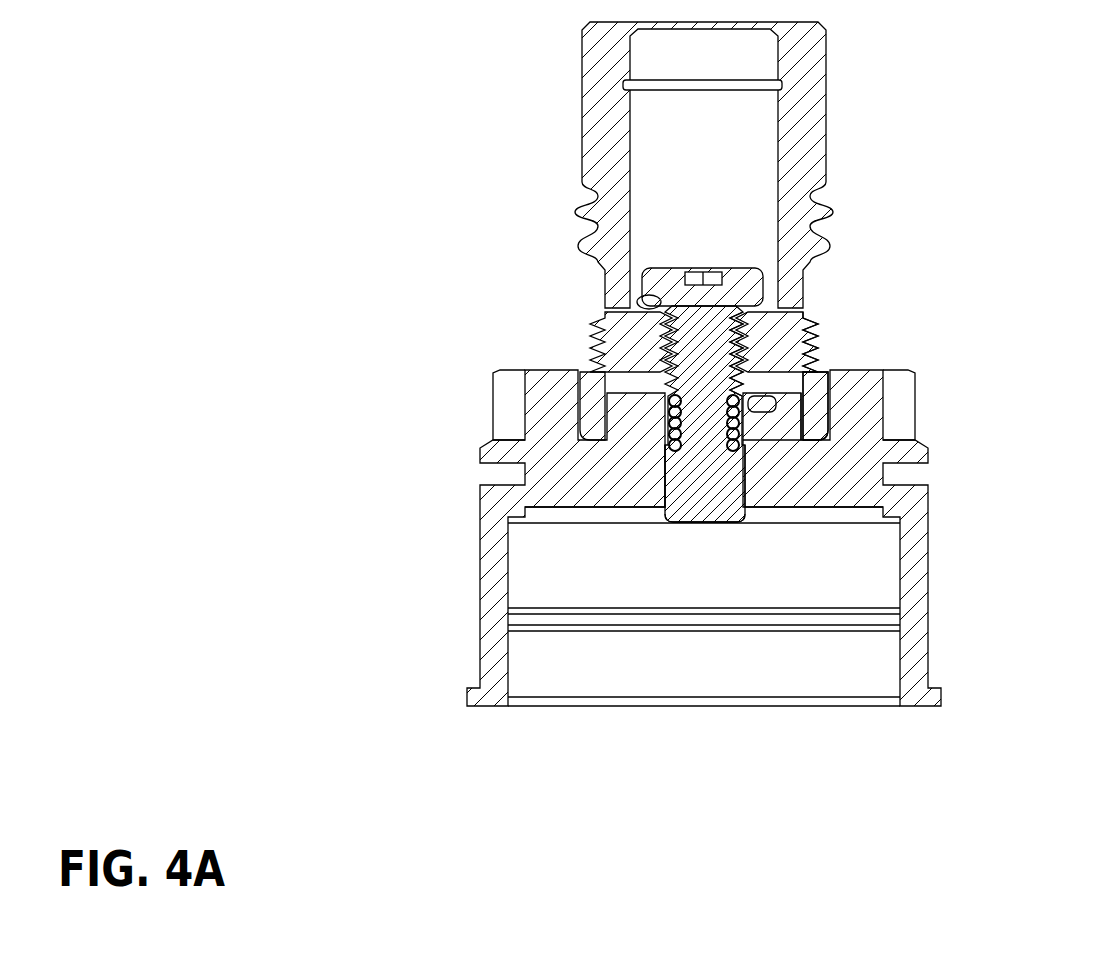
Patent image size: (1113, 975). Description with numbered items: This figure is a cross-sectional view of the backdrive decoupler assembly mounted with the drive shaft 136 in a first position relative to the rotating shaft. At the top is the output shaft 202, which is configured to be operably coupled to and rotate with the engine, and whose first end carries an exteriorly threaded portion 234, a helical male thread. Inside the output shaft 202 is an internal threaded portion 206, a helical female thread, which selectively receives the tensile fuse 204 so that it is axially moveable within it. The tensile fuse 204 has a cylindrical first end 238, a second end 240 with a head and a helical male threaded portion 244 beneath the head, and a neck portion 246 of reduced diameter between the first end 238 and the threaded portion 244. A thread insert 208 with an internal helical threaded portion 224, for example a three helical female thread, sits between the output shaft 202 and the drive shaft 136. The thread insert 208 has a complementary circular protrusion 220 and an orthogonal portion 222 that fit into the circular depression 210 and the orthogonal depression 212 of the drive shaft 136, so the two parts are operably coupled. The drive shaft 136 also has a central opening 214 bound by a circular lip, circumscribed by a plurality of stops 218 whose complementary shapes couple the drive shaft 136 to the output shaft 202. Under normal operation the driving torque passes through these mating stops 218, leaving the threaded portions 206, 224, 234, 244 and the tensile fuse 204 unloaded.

The output shaft 202 is at (805, 128).
The tensile fuse 204 is at (742, 290).
The second end 240 is at (672, 302).
The exteriorly threaded portion 234 is at (600, 350).
The internal helical threaded portion 224 is at (798, 340).
The internal threaded portion 206 is at (665, 335).
The threaded portion 244 is at (750, 321).
The neck portion 246 is at (677, 397).
The drive shaft 136 is at (915, 597).
The orthogonal depression 212 is at (930, 449).
The thread insert 208 is at (825, 395).
The orthogonal portion 222 is at (827, 403).
The circular protrusion 220 is at (792, 405).
The circular depression 210 is at (818, 438).
The stops 218 is at (777, 445).
The cylindrical first end 238 is at (690, 468).
The central opening 214 is at (673, 492).